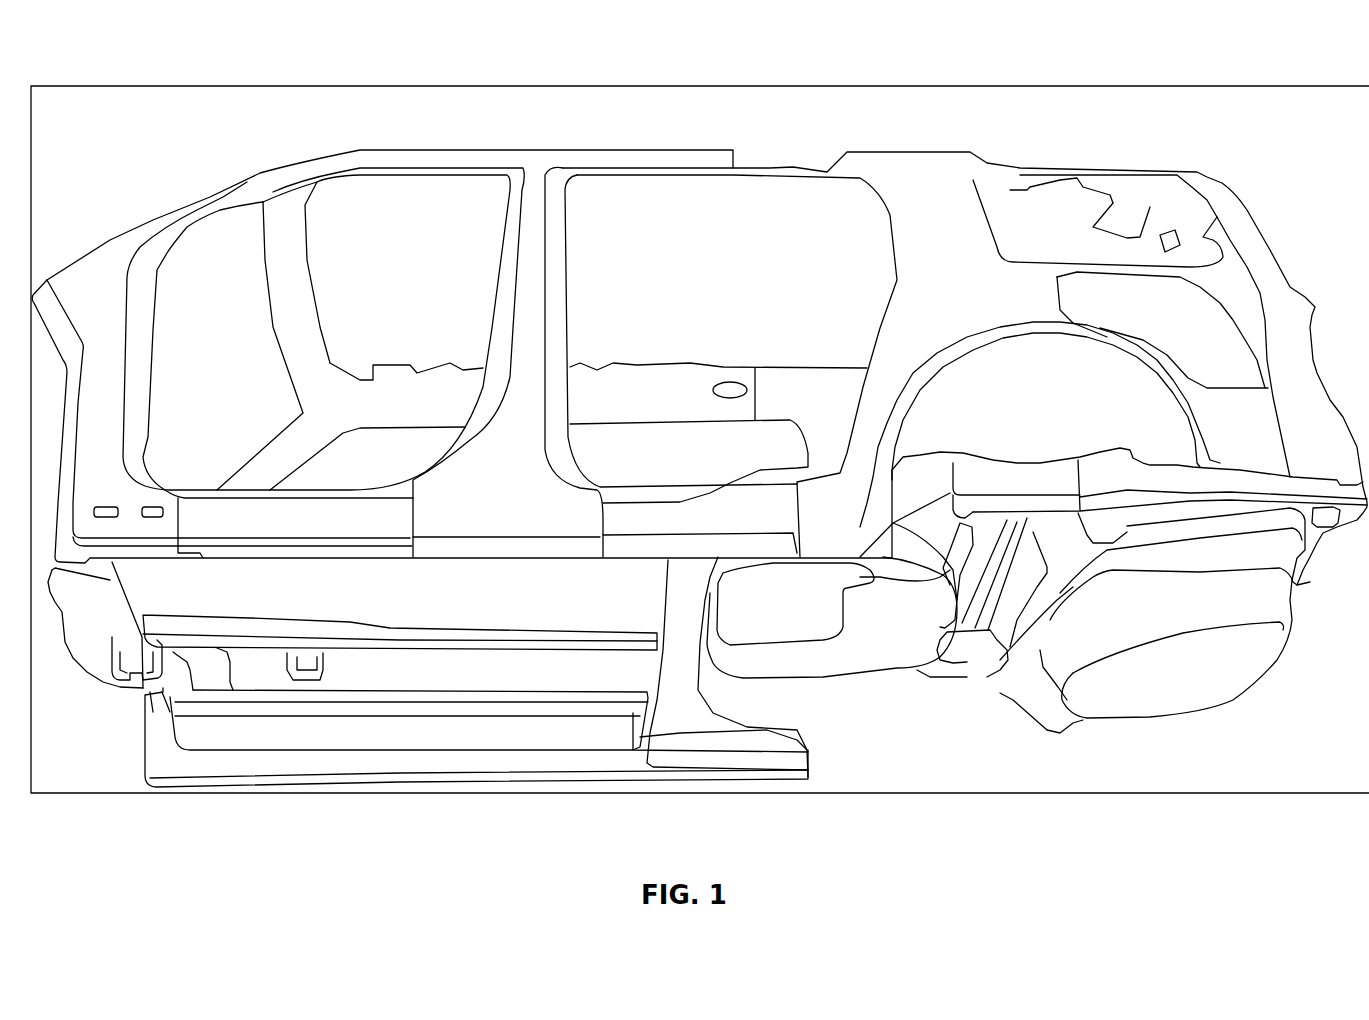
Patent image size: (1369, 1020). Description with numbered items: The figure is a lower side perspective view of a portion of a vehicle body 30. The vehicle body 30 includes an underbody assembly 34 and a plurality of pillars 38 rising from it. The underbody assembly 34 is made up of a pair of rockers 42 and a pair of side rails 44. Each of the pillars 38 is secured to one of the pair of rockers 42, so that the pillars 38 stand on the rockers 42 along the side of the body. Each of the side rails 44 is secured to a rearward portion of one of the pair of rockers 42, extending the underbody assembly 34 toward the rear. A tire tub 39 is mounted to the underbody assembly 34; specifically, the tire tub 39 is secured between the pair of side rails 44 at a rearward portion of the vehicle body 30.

The vehicle body 30 is at (1193, 53).
The underbody assembly 34 is at (937, 705).
The pillars 38 is at (118, 290).
The tire tub 39 is at (1170, 688).
The rockers 42 is at (557, 760).
The side rails 44 is at (927, 510).